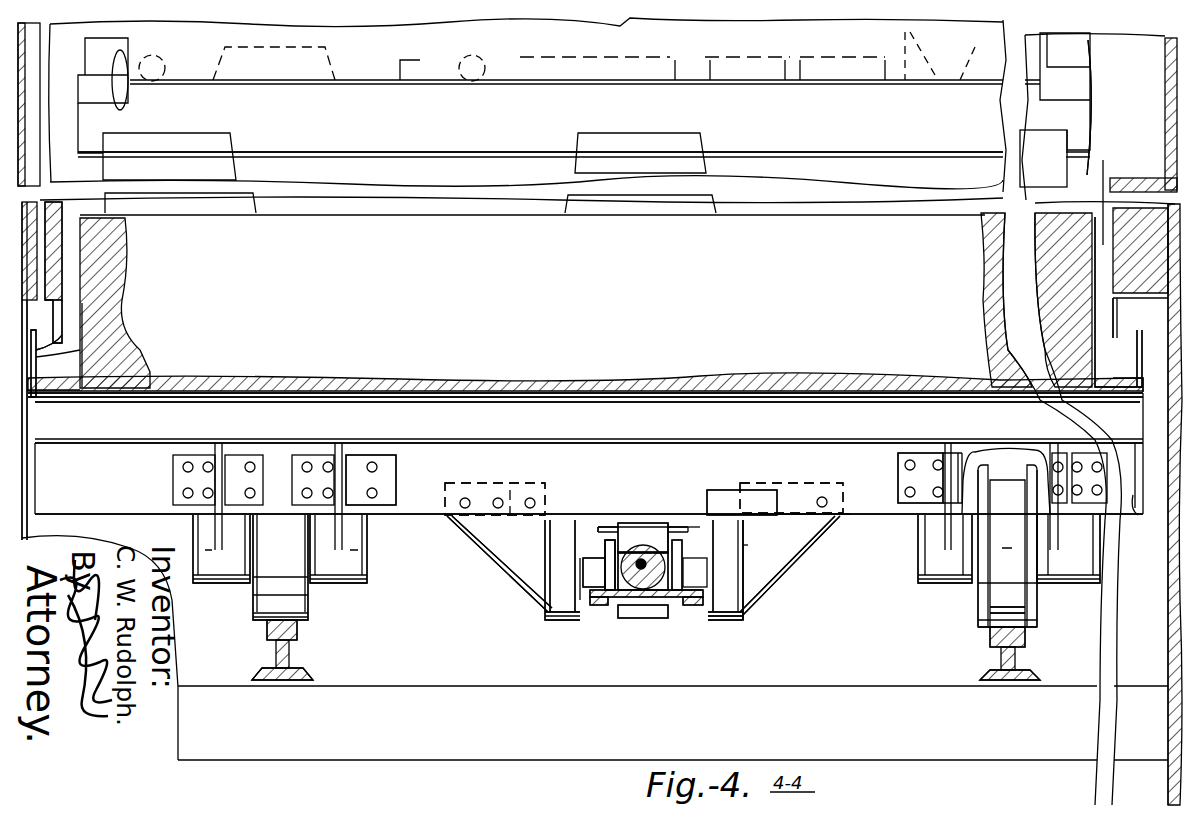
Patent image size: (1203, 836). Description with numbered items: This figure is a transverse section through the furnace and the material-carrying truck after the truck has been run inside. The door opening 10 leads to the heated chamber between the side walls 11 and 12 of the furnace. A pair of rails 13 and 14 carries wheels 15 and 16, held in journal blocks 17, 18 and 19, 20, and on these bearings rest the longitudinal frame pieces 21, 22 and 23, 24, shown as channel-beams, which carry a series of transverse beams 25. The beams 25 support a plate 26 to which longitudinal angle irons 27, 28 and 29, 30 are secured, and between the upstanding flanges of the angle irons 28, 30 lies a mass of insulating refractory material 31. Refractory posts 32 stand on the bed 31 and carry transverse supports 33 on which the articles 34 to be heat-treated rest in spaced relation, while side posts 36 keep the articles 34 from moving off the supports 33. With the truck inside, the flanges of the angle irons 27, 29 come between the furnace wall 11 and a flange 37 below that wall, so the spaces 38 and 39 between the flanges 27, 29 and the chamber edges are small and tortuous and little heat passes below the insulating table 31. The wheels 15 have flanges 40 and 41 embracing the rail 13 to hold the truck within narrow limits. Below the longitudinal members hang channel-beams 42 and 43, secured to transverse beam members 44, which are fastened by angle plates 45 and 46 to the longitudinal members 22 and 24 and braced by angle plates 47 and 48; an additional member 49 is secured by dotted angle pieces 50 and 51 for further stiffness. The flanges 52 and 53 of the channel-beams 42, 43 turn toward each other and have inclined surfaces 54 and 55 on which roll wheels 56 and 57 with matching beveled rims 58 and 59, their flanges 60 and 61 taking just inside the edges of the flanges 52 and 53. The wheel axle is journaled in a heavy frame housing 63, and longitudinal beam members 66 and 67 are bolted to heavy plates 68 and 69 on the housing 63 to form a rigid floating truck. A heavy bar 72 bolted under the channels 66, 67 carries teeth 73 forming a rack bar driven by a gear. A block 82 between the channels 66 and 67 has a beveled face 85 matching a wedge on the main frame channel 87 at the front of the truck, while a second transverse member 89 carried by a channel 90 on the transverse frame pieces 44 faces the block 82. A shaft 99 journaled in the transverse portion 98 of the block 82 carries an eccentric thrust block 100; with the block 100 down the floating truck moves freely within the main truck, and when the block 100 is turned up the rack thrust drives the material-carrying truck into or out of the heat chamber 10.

The door opening 10 is at (1090, 170).
The side wall 11 is at (1170, 535).
The side wall 12 is at (27, 465).
The rail 13 is at (1008, 655).
The rail 14 is at (297, 642).
The wheel 15 is at (1003, 590).
The wheel 16 is at (310, 603).
The journal block 17 is at (1062, 572).
The journal block 18 is at (937, 575).
The journal block 19 is at (222, 568).
The journal block 20 is at (360, 583).
The longitudinal frame piece 21 is at (1075, 480).
The longitudinal frame piece 22 is at (950, 480).
The longitudinal frame piece 23 is at (216, 478).
The longitudinal frame piece 24 is at (345, 478).
The transverse beam 25 is at (480, 418).
The plate 26 is at (832, 395).
The longitudinal angle iron 27 is at (1142, 343).
The longitudinal angle iron 28 is at (1095, 362).
The longitudinal angle iron 29 is at (33, 352).
The longitudinal angle iron 30 is at (80, 350).
The insulating refractory material 31 is at (782, 205).
The post 32 is at (225, 142).
The transverse support 33 is at (432, 142).
The article to be heat-treated 34 is at (330, 75).
The side post 36 is at (128, 95).
The flange 37 is at (62, 318).
The space 38 is at (27, 370).
The space 39 is at (1103, 245).
The wheel flange 40 is at (1037, 618).
The wheel flange 41 is at (988, 612).
The channel-beam 42 is at (741, 572).
The channel-beam 43 is at (575, 570).
The transverse beam member 44 is at (867, 457).
The angle plate 45 is at (917, 457).
The angle plate 46 is at (372, 457).
The angle plate 47 is at (815, 543).
The angle plate 48 is at (472, 543).
The additional member 49 is at (637, 523).
The angle piece 50 is at (790, 525).
The angle piece 51 is at (447, 532).
The channel-beam flange 52 is at (730, 612).
The channel-beam flange 53 is at (565, 620).
The angularly disposed surface 54 is at (745, 560).
The angularly disposed surface 55 is at (583, 560).
The wheel 56 is at (705, 608).
The wheel 57 is at (583, 608).
The annular rim 58 is at (752, 605).
The annular rim 59 is at (560, 582).
The wheel flange 60 is at (707, 513).
The wheel flange 61 is at (600, 545).
The frame housing 63 is at (585, 597).
The longitudinal beam member 66 is at (693, 500).
The longitudinal beam member 67 is at (598, 527).
The heavy plate 68 is at (677, 565).
The heavy plate 69 is at (610, 565).
The heavy bar 72 is at (613, 600).
The tooth 73 is at (680, 600).
The block 82 is at (655, 545).
The beveled face 85 is at (630, 527).
The main frame channel 87 is at (112, 460).
The transverse member 89 is at (683, 528).
The channel 90 is at (750, 502).
The transverse portion 98 is at (623, 605).
The shaft 99 is at (665, 605).
The thrust block 100 is at (632, 596).